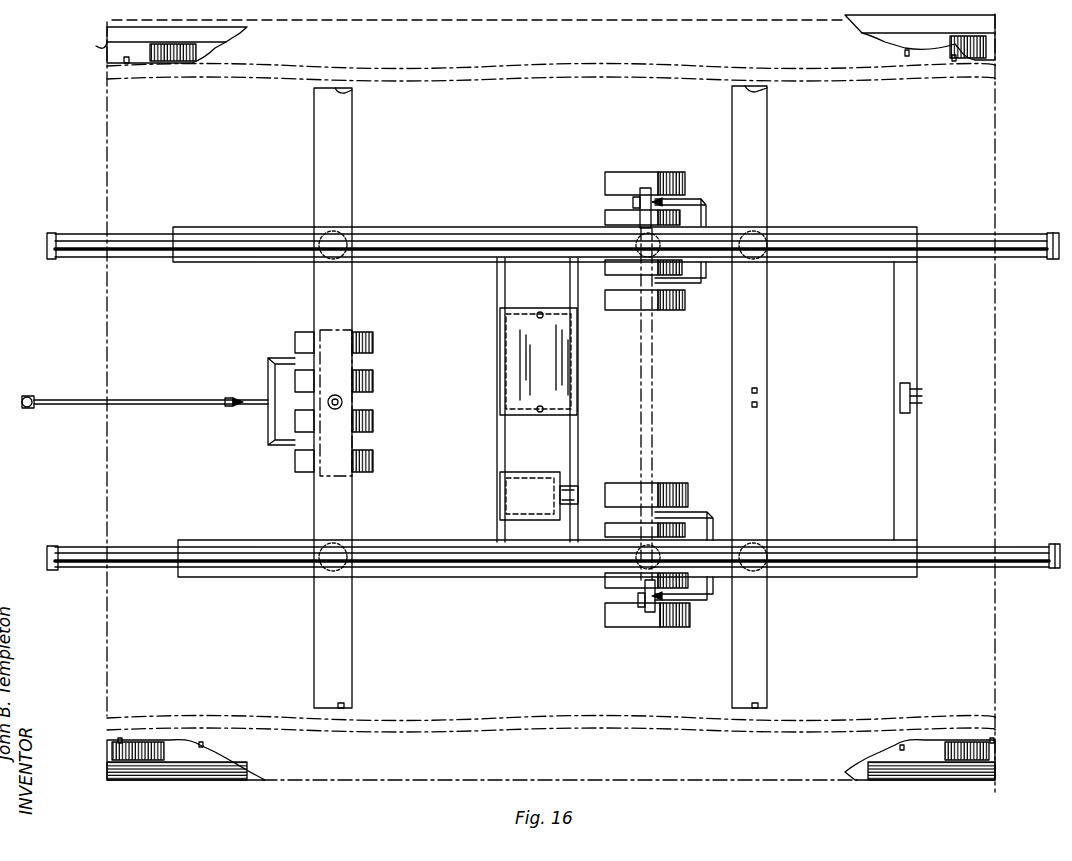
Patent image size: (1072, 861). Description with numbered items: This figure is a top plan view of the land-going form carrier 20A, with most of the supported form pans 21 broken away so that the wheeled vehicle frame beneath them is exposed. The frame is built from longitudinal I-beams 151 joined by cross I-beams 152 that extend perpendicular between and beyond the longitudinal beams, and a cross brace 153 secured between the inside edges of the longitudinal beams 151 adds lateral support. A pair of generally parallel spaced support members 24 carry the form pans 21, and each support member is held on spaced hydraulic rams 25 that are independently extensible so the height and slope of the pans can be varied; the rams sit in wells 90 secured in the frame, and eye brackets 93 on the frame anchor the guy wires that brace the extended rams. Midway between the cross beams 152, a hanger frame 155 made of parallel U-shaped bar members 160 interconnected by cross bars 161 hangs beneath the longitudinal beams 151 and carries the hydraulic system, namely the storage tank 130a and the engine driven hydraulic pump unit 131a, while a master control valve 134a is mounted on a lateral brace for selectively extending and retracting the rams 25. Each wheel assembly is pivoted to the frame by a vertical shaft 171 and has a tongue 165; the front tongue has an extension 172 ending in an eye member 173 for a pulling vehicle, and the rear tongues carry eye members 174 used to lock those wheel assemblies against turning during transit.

The form pans 21 is at (48, 40).
The support members 24 is at (66, 236).
The hydraulic rams 25 is at (790, 228).
The form carrier 20A is at (308, 204).
The wells 90 is at (352, 576).
The eye brackets 93 is at (352, 91).
The storage tank 130a is at (508, 389).
The engine driven hydraulic pump unit 131a is at (508, 497).
The master control valve 134a is at (900, 394).
The longitudinal I-beams 151 is at (182, 578).
The cross I-beams 152 is at (760, 322).
The cross brace 153 is at (641, 344).
The hanger frame 155 is at (488, 286).
The U-shaped bar members 160 is at (595, 198).
The cross bars 161 is at (375, 352).
The tongue 165 is at (722, 182).
The vertical shaft 171 is at (343, 404).
The tongue extension 172 is at (76, 398).
The eye member 173 is at (30, 394).
The eye member 174 is at (236, 408).